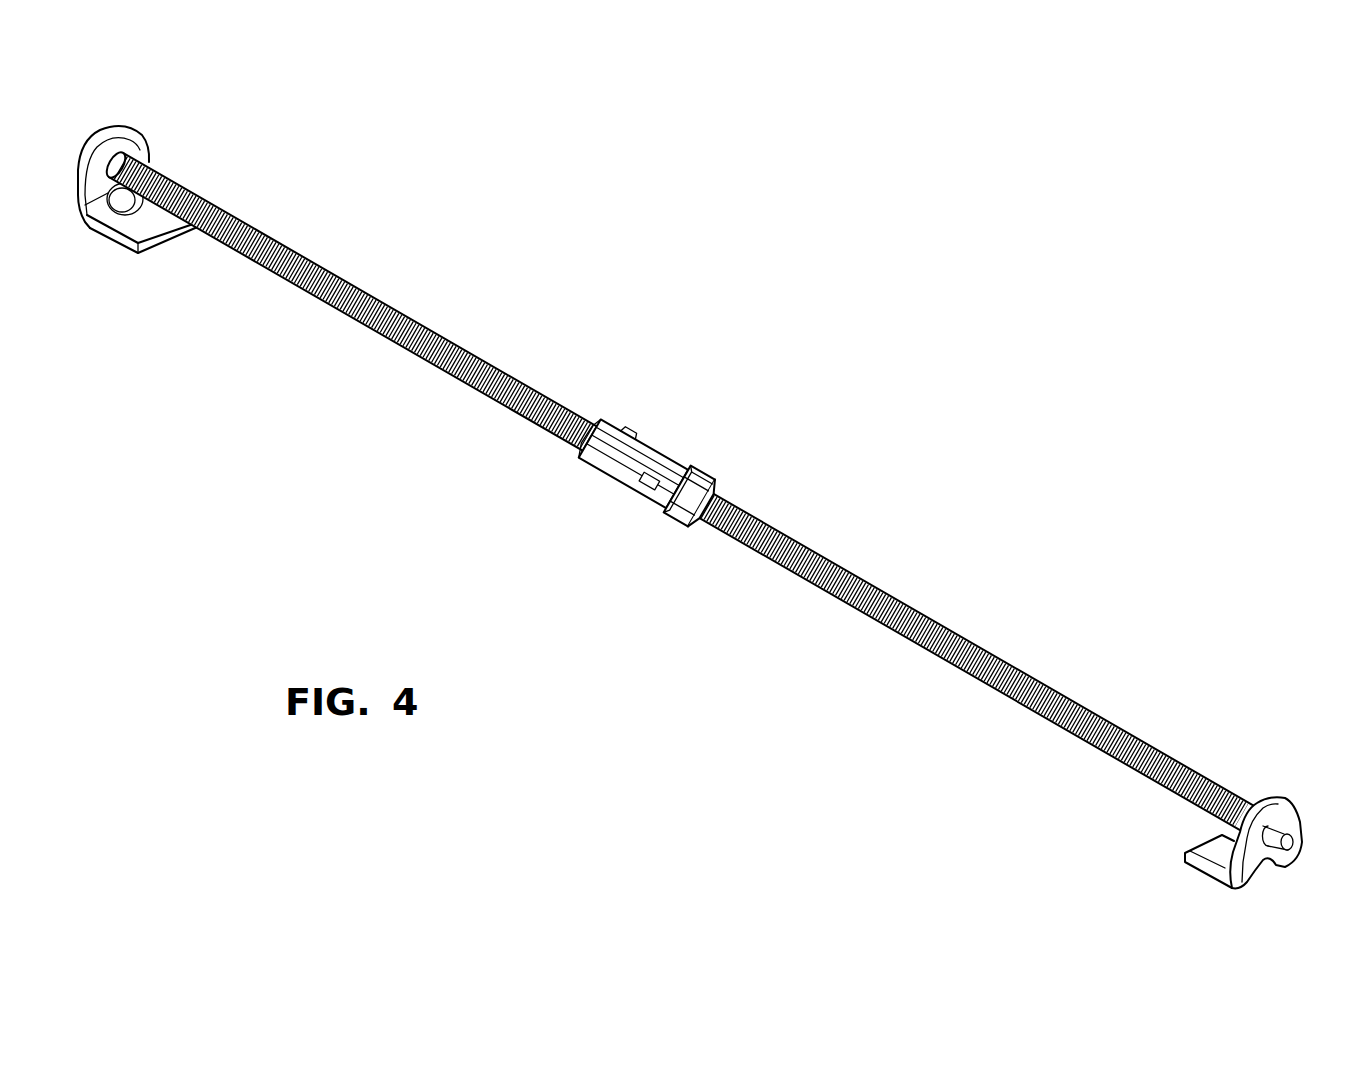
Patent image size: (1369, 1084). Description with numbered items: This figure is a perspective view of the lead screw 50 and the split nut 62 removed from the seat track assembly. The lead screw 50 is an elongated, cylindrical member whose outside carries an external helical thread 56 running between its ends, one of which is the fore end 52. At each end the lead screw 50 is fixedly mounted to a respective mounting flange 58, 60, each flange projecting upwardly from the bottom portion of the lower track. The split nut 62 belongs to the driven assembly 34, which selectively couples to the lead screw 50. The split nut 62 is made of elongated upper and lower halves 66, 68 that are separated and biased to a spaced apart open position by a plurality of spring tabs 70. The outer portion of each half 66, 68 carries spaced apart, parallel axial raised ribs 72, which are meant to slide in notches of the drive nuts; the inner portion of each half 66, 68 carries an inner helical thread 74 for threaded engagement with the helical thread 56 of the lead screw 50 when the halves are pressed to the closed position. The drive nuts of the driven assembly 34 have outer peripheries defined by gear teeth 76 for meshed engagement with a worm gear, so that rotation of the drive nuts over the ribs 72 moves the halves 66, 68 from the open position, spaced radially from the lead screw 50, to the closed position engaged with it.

The driven assembly 34 is at (131, 148).
The lead screw 50 is at (376, 296).
The fore end 52 is at (1246, 797).
The external helical thread 56 is at (974, 652).
The mounting flange 58 is at (1293, 823).
The mounting flange 60 is at (127, 232).
The split nut 62 is at (643, 465).
The upper half 66 is at (656, 447).
The lower half 68 is at (606, 493).
The spring tabs 70 is at (651, 489).
The axial raised ribs 72 is at (580, 457).
The inner helical thread 74 is at (694, 520).
The gear teeth 76 is at (690, 463).